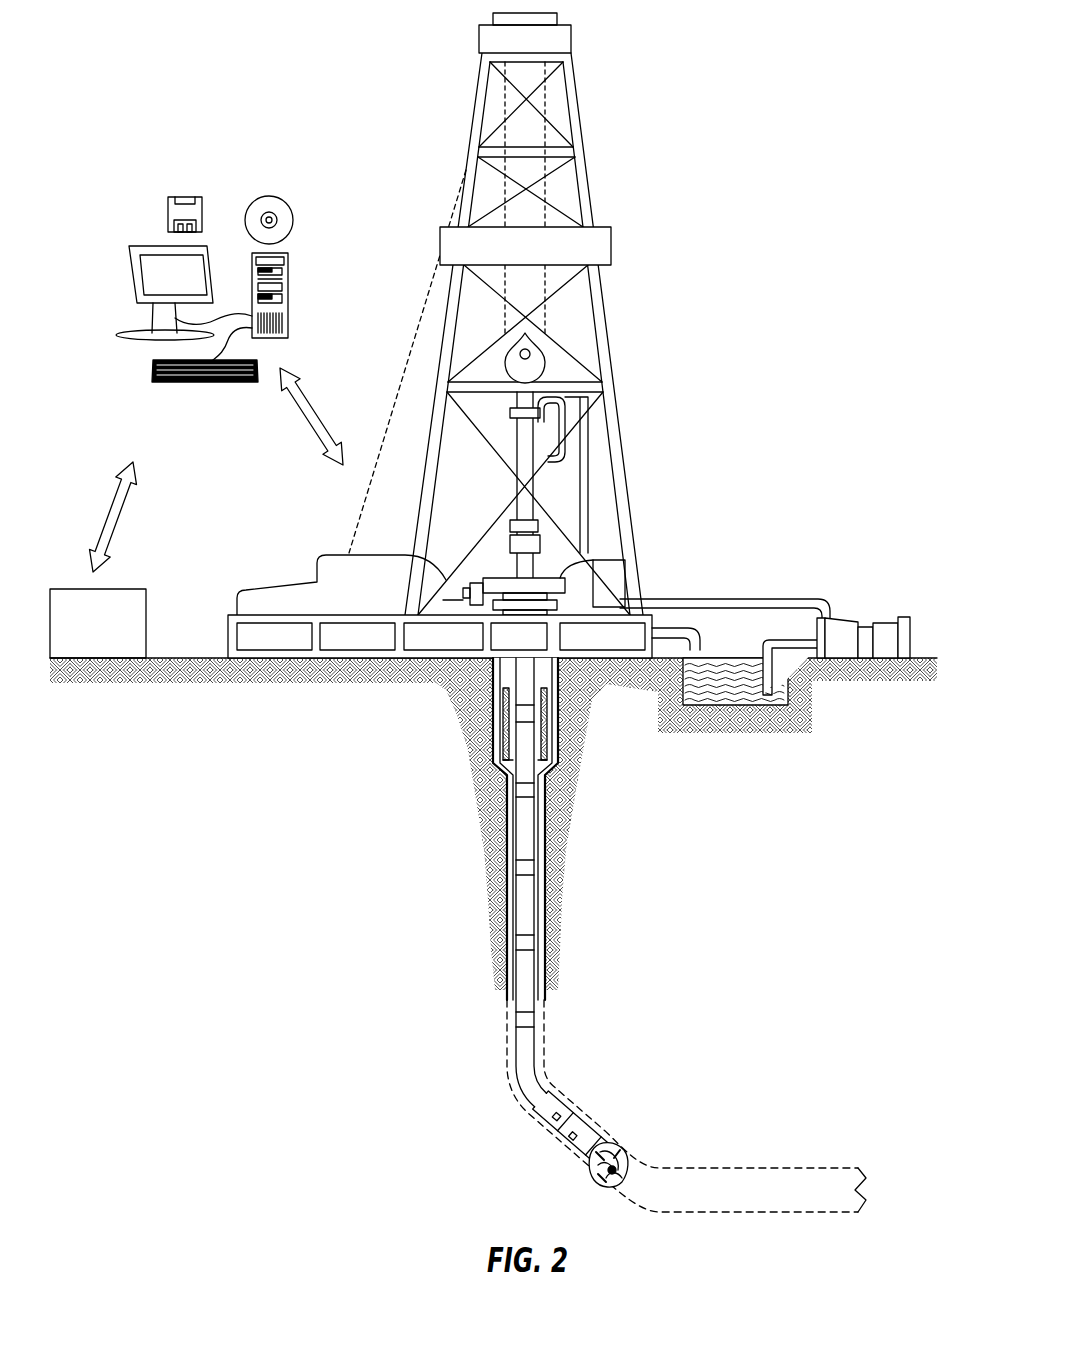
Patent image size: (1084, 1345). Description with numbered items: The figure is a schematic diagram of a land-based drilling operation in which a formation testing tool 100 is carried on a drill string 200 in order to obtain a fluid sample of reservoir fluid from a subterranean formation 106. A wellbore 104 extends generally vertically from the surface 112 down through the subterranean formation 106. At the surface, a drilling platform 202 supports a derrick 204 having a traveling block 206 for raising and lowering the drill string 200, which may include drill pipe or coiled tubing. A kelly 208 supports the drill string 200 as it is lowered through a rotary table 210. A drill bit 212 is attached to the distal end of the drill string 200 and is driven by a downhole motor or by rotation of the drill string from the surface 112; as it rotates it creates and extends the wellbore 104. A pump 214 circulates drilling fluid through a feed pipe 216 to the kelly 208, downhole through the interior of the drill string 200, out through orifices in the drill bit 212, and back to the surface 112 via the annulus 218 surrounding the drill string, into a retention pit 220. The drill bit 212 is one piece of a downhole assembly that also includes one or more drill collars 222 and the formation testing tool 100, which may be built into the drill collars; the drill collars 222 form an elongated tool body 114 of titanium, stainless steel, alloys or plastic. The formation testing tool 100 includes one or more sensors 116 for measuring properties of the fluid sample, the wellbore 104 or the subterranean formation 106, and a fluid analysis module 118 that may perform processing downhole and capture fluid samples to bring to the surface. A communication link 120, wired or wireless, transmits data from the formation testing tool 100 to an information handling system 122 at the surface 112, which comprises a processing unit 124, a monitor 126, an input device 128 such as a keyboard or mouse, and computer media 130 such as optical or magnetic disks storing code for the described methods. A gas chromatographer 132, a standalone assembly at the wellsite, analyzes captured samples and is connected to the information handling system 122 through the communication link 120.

The formation testing tool 100 is at (573, 1116).
The wellbore 104 is at (548, 862).
The subterranean formation 106 is at (770, 957).
The surface 112 is at (920, 658).
The tool body 114 is at (570, 1107).
The sensor 116 is at (565, 1157).
The fluid analysis module 118 is at (541, 1128).
The communication link 120 is at (122, 520).
The information handling system 122 is at (200, 293).
The processing unit 124 is at (285, 268).
The monitor 126 is at (133, 283).
The input device 128 is at (158, 382).
The computer media 130 is at (263, 195).
The gas chromatographer 132 is at (118, 637).
The drill string 200 is at (535, 843).
The drilling platform 202 is at (228, 636).
The derrick 204 is at (585, 167).
The traveling block 206 is at (547, 355).
The kelly 208 is at (523, 440).
The rotary table 210 is at (561, 574).
The drill bit 212 is at (620, 1150).
The pump 214 is at (848, 618).
The feed pipe 216 is at (763, 598).
The annulus 218 is at (506, 868).
The retention pit 220 is at (745, 692).
The drill collar 222 is at (572, 1125).